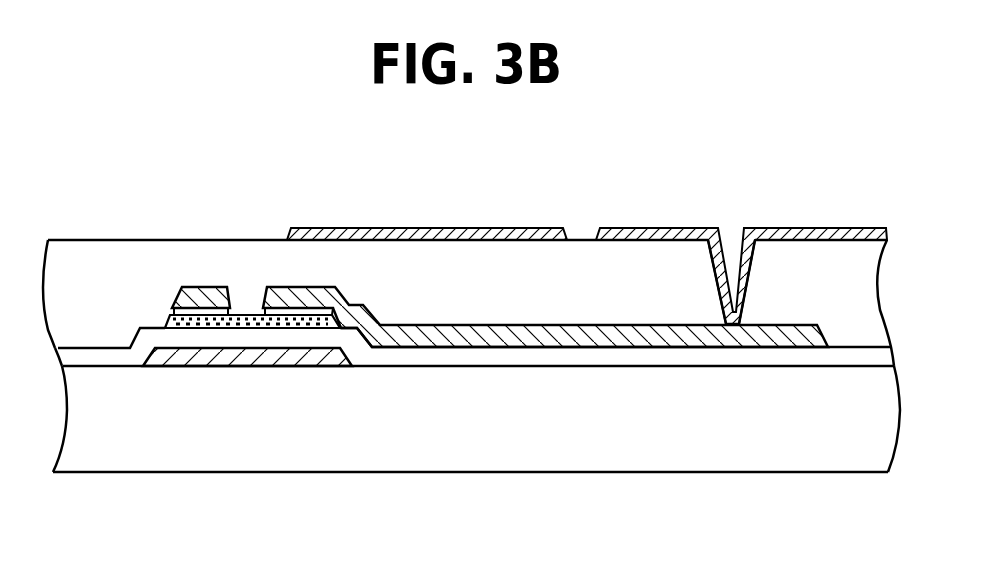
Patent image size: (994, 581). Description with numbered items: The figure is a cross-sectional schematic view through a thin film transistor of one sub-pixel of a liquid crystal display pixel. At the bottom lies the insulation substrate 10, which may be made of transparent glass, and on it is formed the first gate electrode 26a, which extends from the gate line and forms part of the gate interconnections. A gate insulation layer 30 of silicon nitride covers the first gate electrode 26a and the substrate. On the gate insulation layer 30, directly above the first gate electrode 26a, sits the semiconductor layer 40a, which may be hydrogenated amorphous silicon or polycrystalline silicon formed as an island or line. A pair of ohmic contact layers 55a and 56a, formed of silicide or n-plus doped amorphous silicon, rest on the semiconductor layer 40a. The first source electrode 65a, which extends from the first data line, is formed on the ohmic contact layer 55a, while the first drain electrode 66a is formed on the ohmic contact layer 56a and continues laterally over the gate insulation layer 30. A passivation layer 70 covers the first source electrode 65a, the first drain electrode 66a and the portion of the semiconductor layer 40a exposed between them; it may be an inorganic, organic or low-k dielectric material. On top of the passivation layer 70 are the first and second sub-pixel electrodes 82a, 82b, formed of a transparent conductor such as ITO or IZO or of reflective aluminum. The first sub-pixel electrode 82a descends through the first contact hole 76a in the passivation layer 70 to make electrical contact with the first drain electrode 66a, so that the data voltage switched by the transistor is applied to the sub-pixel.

The insulation substrate 10 is at (720, 452).
The first gate electrode 26a is at (267, 352).
The gate insulation layer 30 is at (623, 352).
The semiconductor layer 40a is at (197, 322).
The ohmic contact layer 55a is at (214, 308).
The ohmic contact layer 56a is at (293, 308).
The first source electrode 65a is at (197, 292).
The first drain electrode 66a is at (423, 337).
The passivation layer 70 is at (513, 312).
The first contact hole 76a is at (730, 216).
The first sub-pixel electrode 82a is at (658, 226).
The second sub-pixel electrode 82b is at (473, 226).